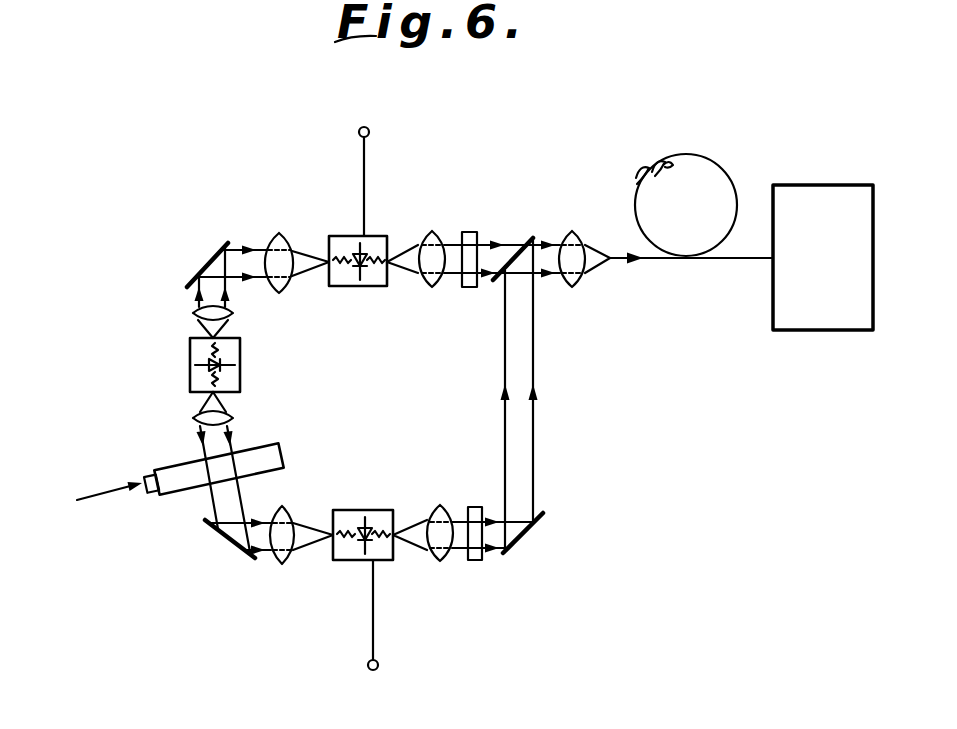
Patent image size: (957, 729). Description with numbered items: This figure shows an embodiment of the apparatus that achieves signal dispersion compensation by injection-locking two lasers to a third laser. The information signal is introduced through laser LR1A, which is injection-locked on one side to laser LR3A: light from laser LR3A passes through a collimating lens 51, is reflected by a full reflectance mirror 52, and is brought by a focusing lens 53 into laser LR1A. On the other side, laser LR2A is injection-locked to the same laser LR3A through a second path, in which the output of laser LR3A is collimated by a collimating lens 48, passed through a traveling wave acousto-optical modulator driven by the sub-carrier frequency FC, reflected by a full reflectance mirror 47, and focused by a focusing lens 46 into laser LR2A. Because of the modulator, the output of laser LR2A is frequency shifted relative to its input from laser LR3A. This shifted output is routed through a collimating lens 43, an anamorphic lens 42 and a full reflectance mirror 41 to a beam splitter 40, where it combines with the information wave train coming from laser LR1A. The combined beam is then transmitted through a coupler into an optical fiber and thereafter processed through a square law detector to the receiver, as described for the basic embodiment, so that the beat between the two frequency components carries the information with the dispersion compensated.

The full reflectance mirror 52 is at (208, 258).
The focusing lens 53 is at (292, 218).
The collimating lens 51 is at (192, 314).
The collimating lens 48 is at (194, 418).
The full reflectance mirror 47 is at (227, 532).
The focusing lens 46 is at (282, 565).
The collimating lens 43 is at (440, 562).
The anamorphic lens 42 is at (474, 560).
The full reflectance mirror 41 is at (523, 538).
The beam splitter 40 is at (532, 242).
The laser LR1A is at (349, 286).
The laser LR2A is at (356, 510).
The laser LR3A is at (240, 372).
The sub-carrier frequency FC is at (91, 504).